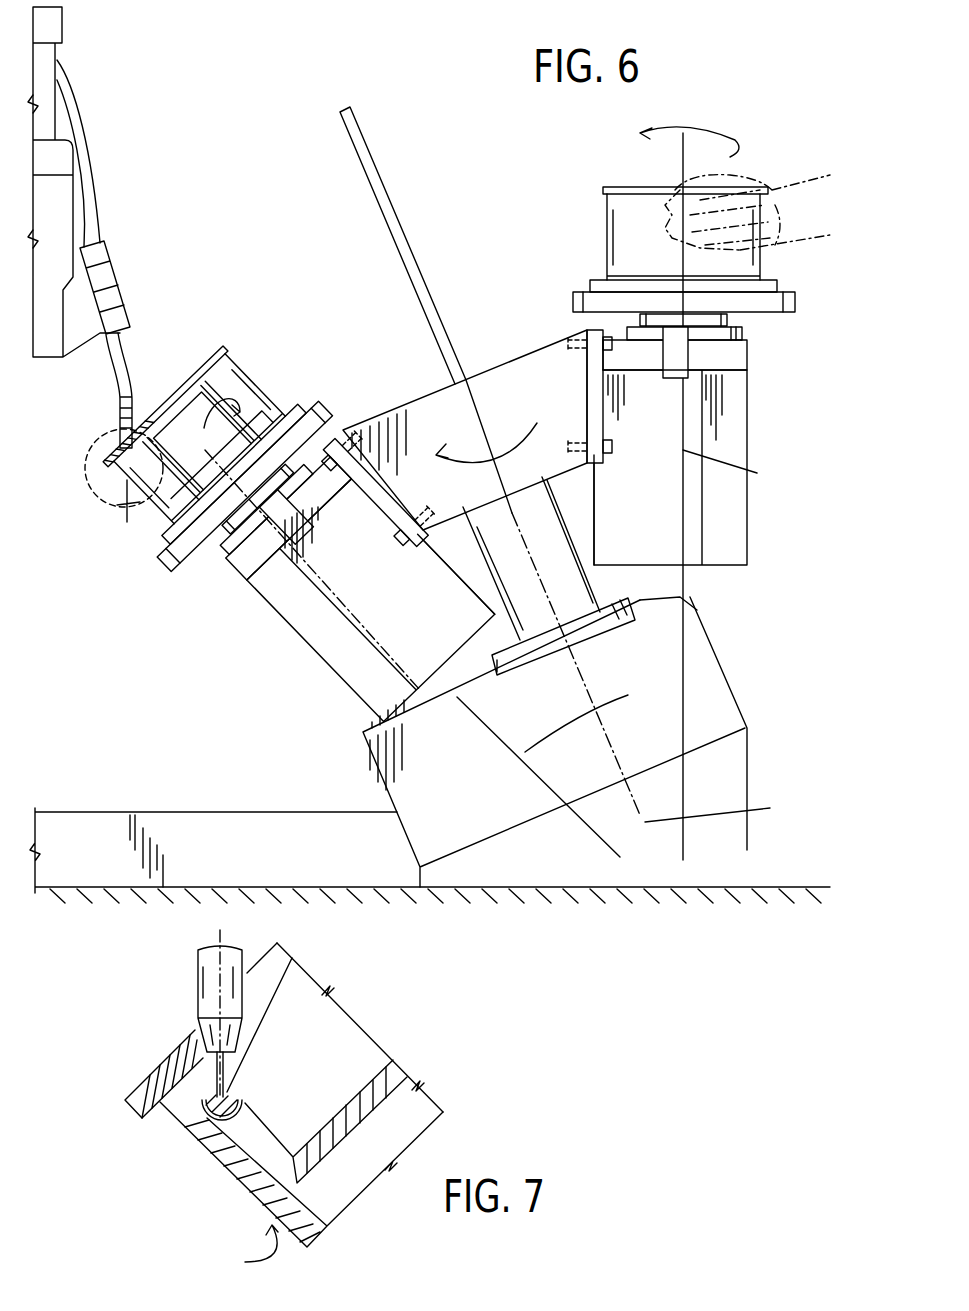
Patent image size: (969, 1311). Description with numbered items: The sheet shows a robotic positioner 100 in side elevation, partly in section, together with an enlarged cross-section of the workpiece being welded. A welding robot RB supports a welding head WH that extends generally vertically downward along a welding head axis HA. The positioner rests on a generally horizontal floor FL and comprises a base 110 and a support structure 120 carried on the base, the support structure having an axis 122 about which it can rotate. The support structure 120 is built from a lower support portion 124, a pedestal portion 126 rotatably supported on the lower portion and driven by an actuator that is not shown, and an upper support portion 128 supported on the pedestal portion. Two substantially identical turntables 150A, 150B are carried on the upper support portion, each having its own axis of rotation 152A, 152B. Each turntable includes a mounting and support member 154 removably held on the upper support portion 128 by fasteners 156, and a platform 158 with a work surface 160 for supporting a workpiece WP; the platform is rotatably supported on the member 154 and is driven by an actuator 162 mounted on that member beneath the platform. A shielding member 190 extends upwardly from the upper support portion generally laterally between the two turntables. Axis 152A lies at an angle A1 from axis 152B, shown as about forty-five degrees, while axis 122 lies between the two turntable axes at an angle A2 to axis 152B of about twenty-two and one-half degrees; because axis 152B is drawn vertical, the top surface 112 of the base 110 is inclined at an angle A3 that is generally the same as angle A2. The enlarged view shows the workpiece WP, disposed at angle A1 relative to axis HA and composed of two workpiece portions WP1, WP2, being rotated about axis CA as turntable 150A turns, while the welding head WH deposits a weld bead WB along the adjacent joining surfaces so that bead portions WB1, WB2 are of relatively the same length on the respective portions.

In FIG. 6, the robotic positioner 100 is at (463, 185).
In FIG. 6, the base 110 is at (598, 860).
In FIG. 6, the top surface 112 is at (482, 840).
In FIG. 6, the support structure 120 is at (648, 593).
In FIG. 6, the axis 122 is at (734, 807).
In FIG. 6, the lower support portion 124 is at (734, 723).
In FIG. 6, the pedestal portion 126 is at (600, 582).
In FIG. 6, the upper support portion 128 is at (492, 358).
In FIG. 6, the shielding member 190 is at (365, 135).
In FIG. 6, the turntable 150A is at (183, 562).
In FIG. 6, the turntable 150B is at (597, 290).
In FIG. 6, the axis of rotation 152A is at (355, 680).
In FIG. 6, the axis of rotation 152B is at (753, 470).
In FIG. 6, the mounting and support member 154 is at (748, 363).
In FIG. 6, the fasteners 156 is at (585, 337).
In FIG. 6, the platform 158 is at (582, 293).
In FIG. 6, the work surface 160 is at (600, 282).
In FIG. 6, the actuator 162 is at (725, 520).
In FIG. 6, the welding robot RB is at (72, 30).
In FIG. 6, the welding head WH is at (135, 340).
In FIG. 7, the welding head WH is at (197, 985).
In FIG. 6, the workpiece WP is at (762, 172).
In FIG. 7, the workpiece WP is at (368, 1018).
In FIG. 6, the workpiece portion WP1 is at (105, 449).
In FIG. 7, the workpiece portion WP1 is at (236, 1182).
In FIG. 6, the workpiece portion WP2 is at (168, 458).
In FIG. 7, the workpiece portion WP2 is at (385, 1105).
In FIG. 6, the welding head axis HA is at (127, 497).
In FIG. 7, the welding head axis HA is at (198, 1013).
In FIG. 6, the cylinder axis CA is at (325, 617).
In FIG. 6, the floor FL is at (191, 884).
In FIG. 6, the angle A1 is at (525, 752).
In FIG. 6, the angle A2 is at (612, 744).
In FIG. 6, the angle A3 is at (537, 822).
In FIG. 7, the weld bead WB is at (238, 1095).
In FIG. 7, the bead portion WB1 is at (192, 1126).
In FIG. 7, the bead portion WB2 is at (240, 1120).